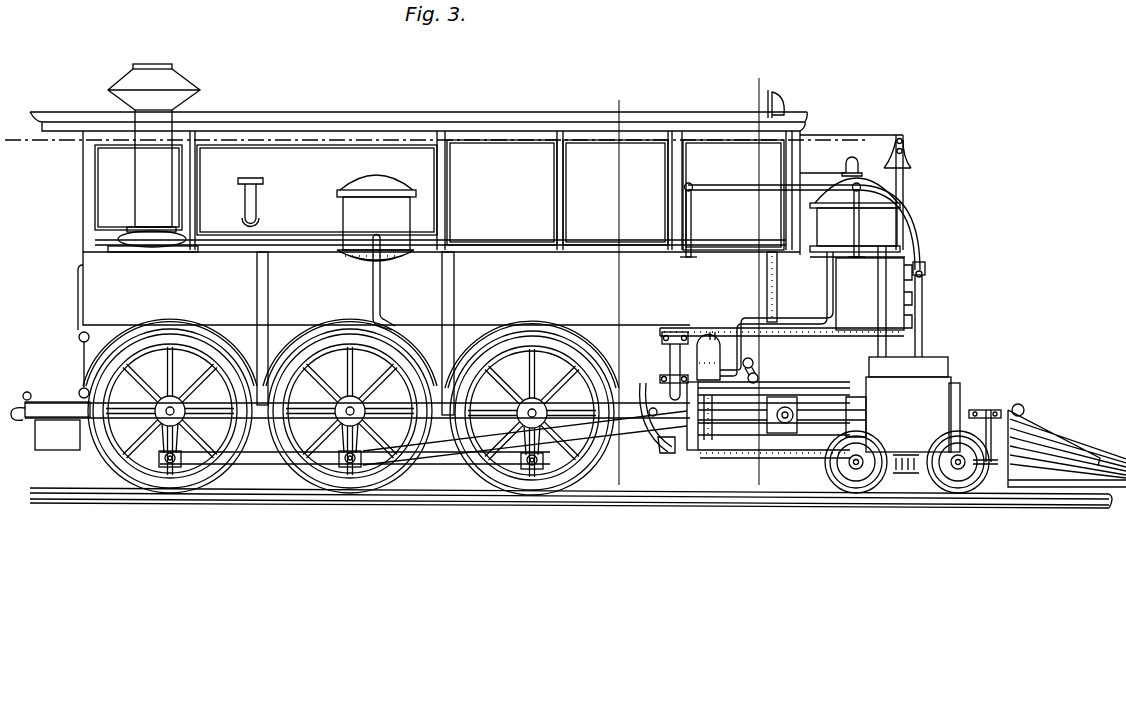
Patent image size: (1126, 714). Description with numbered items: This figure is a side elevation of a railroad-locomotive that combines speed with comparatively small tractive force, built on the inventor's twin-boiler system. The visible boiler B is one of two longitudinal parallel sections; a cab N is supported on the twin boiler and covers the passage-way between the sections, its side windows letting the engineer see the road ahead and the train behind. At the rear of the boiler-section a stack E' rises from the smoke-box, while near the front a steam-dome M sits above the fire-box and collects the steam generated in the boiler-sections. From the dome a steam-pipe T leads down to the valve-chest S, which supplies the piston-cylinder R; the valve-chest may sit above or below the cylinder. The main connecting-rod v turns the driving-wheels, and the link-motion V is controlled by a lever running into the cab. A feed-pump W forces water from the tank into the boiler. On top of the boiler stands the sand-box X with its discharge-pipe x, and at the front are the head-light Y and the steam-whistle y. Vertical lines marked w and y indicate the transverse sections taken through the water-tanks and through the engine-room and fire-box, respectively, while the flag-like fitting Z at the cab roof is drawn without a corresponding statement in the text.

The cab N is at (436, 116).
The stack E' is at (154, 158).
The section line w w is at (627, 278).
The steam-whistle y is at (810, 281).
The signal flag Z is at (785, 104).
The sand-box X is at (376, 218).
The discharge-pipe x is at (384, 283).
The boiler B is at (493, 294).
The steam-dome M is at (857, 217).
The head-light Y is at (898, 271).
The steam-pipe T is at (879, 301).
The feed-pump W is at (706, 346).
The link-motion V is at (653, 407).
The main connecting-rod v is at (525, 438).
The valve-chest S is at (914, 366).
The piston-cylinder R is at (913, 414).